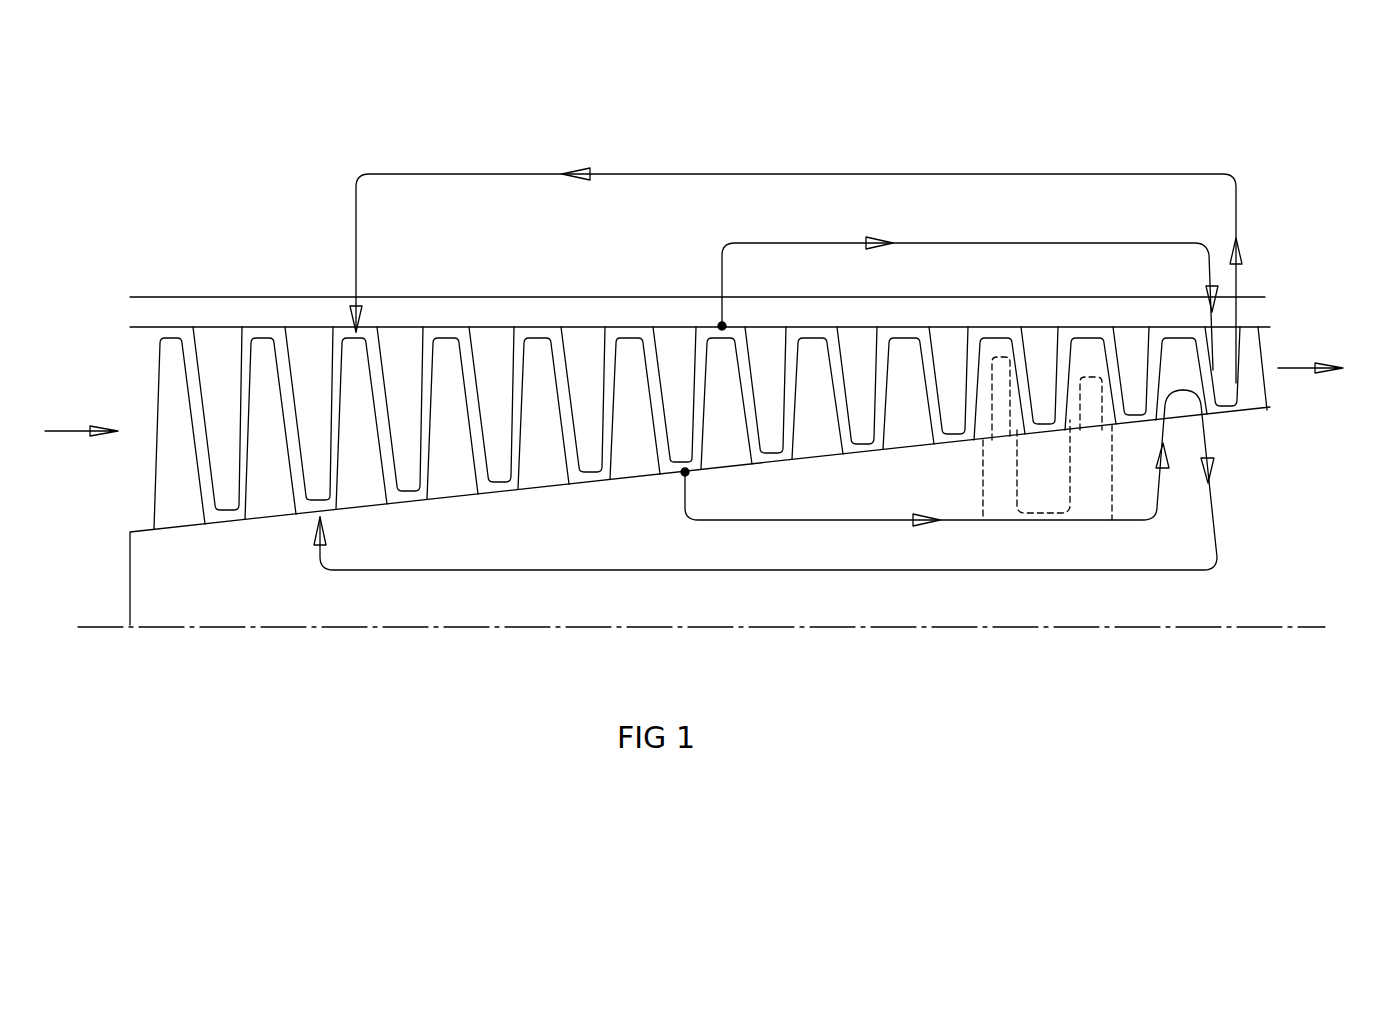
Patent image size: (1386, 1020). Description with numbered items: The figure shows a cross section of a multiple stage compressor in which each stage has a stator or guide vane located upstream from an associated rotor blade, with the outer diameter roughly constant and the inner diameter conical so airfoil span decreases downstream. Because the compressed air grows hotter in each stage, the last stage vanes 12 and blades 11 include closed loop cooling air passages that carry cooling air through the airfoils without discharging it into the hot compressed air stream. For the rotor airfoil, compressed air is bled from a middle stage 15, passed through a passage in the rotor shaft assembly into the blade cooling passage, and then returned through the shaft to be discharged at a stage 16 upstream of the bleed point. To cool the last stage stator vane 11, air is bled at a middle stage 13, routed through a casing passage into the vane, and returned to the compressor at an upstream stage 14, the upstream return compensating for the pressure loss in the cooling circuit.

The last stage stator vane 11 is at (1227, 383).
The last stage vane 12 is at (1180, 370).
The middle stage bleed location for stator vane cooling 13 is at (718, 272).
The upstream return stage for stator vane cooling air 14 is at (356, 265).
The middle stage bleed location for rotor blade cooling 15 is at (688, 520).
The upstream return stage for rotor blade cooling air 16 is at (322, 565).